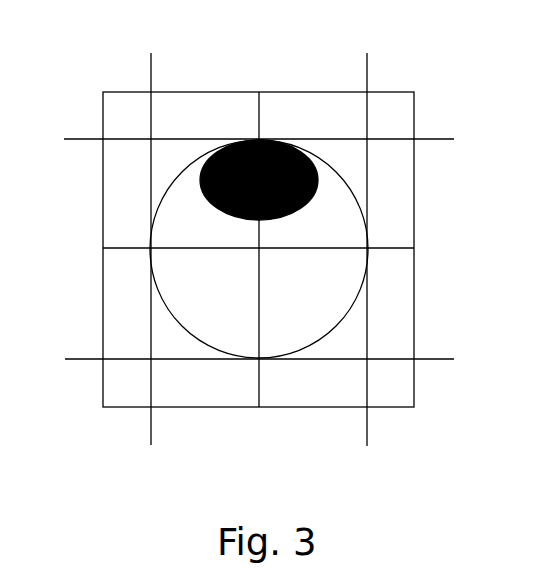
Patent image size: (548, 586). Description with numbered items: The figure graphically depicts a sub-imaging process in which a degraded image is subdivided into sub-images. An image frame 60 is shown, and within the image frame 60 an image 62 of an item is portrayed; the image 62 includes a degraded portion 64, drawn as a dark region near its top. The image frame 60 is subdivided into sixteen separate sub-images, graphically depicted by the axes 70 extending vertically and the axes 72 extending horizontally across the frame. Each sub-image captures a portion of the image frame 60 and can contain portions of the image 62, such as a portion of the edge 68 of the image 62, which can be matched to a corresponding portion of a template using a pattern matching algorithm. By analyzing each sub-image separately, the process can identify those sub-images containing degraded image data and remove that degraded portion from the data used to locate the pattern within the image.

The image frame 60 is at (395, 92).
The image 62 is at (350, 190).
The degraded portion 64 is at (267, 140).
The edge 68 is at (168, 190).
The axes 70 is at (151, 73).
The axes 72 is at (79, 139).